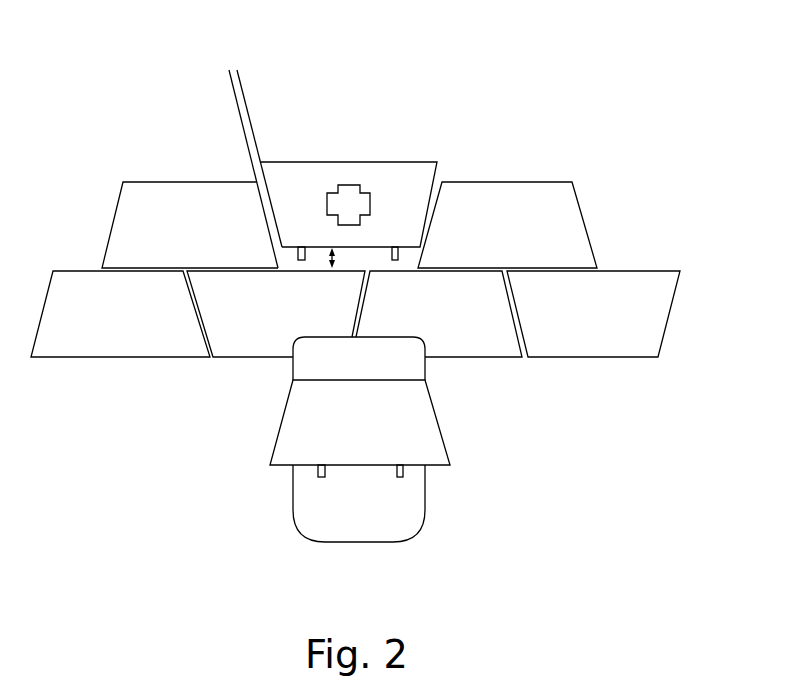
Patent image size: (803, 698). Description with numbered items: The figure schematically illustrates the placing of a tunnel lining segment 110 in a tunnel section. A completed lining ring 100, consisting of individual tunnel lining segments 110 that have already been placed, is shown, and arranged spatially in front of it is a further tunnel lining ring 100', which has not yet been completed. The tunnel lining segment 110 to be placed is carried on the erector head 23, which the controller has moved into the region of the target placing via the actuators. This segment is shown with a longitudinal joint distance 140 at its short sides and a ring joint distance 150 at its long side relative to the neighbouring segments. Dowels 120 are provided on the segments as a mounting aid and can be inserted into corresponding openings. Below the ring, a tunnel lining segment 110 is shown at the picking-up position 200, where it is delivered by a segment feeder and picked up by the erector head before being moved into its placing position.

The lining ring 100 is at (401, 314).
The further tunnel lining ring 100' is at (430, 215).
The tunnel lining segment 110 is at (128, 232).
The dowel 120 is at (399, 253).
The longitudinal joint distance 140 is at (203, 120).
The ring joint distance 150 is at (328, 253).
The erector head 23 is at (350, 202).
The picking-up position 200 is at (410, 504).